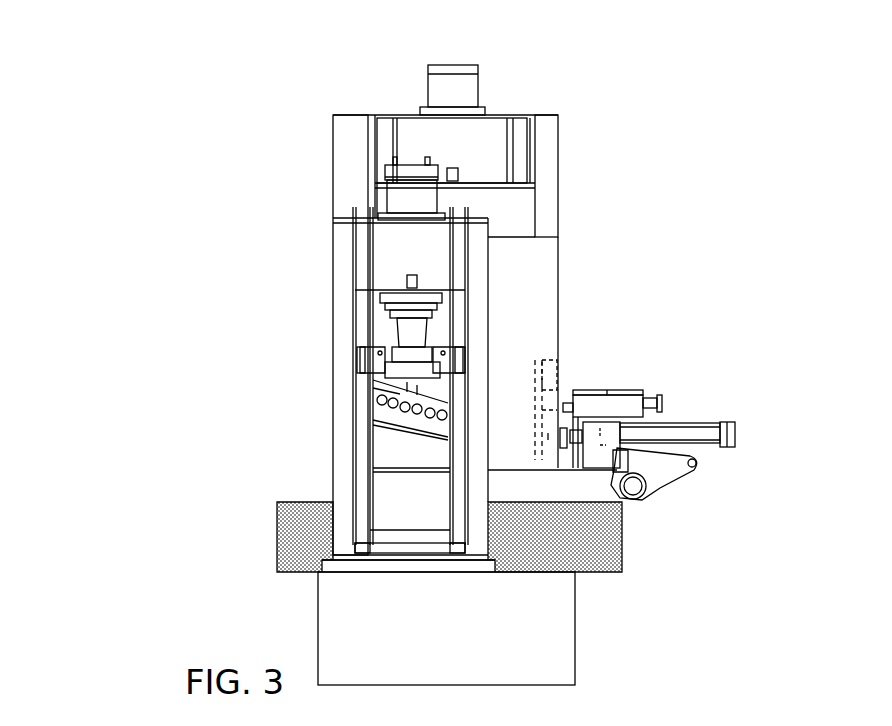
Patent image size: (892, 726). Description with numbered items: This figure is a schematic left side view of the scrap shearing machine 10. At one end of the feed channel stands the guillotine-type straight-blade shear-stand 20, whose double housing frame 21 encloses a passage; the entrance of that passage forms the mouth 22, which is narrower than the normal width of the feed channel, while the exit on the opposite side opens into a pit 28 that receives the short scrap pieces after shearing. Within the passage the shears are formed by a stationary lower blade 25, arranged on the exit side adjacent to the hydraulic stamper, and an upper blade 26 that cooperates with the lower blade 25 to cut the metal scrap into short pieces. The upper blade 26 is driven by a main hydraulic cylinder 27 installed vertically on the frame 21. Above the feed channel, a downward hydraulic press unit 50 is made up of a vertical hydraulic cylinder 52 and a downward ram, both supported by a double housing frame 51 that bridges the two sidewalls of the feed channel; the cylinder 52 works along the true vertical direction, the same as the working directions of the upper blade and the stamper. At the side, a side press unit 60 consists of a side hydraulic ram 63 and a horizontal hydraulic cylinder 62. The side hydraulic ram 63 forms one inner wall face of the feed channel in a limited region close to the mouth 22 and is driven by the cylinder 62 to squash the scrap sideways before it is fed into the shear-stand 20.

The scrap shearing machine 10 is at (305, 122).
The straight-blade shear-stand 20 is at (360, 250).
The double housing frame 21 is at (340, 318).
The mouth 22 is at (400, 453).
The stationary lower blade 25 is at (393, 470).
The upper blade 26 is at (400, 420).
The main hydraulic cylinder 27 is at (407, 193).
The pit 28 is at (449, 593).
The downward hydraulic press unit 50 is at (543, 125).
The double housing frame 51 is at (560, 200).
The vertical hydraulic cylinder 52 is at (442, 90).
The side press unit 60 is at (672, 480).
The horizontal hydraulic cylinder 62 is at (665, 427).
The side hydraulic ram 63 is at (545, 377).